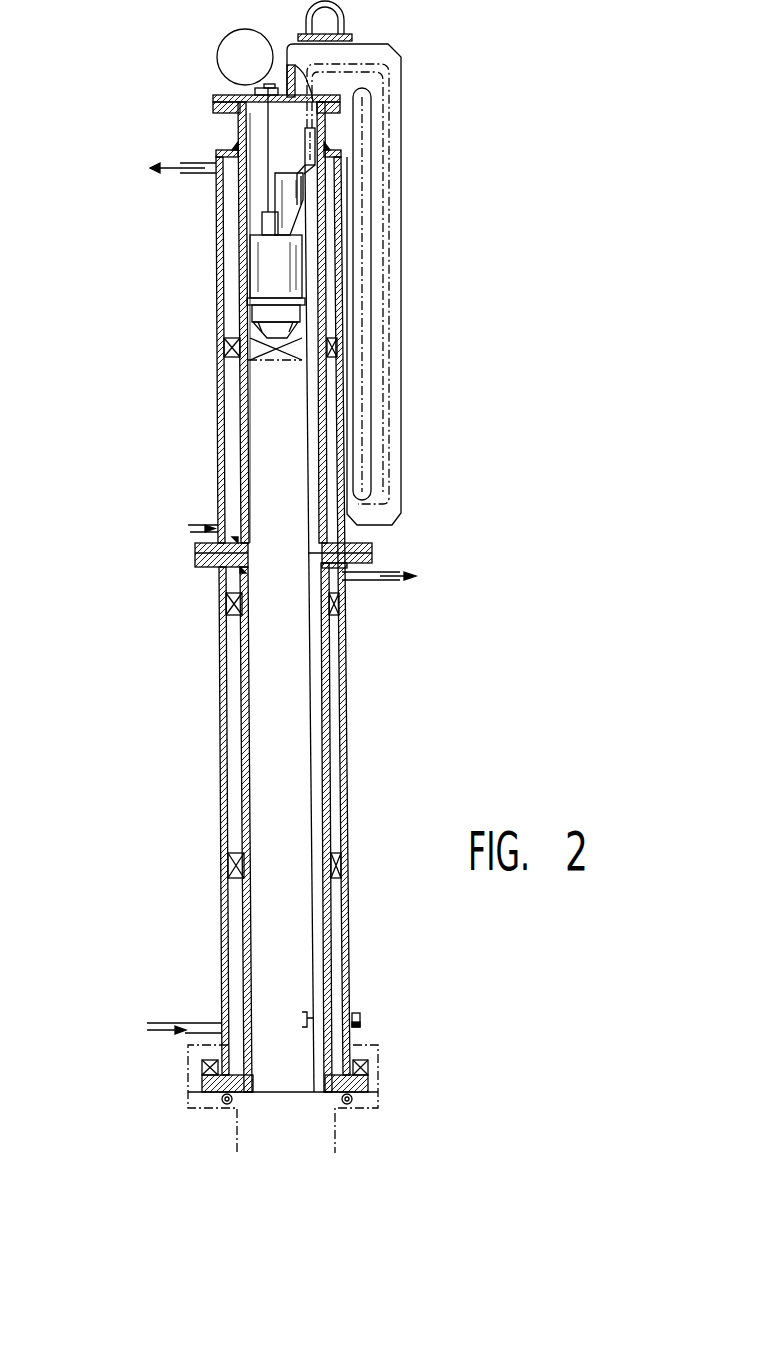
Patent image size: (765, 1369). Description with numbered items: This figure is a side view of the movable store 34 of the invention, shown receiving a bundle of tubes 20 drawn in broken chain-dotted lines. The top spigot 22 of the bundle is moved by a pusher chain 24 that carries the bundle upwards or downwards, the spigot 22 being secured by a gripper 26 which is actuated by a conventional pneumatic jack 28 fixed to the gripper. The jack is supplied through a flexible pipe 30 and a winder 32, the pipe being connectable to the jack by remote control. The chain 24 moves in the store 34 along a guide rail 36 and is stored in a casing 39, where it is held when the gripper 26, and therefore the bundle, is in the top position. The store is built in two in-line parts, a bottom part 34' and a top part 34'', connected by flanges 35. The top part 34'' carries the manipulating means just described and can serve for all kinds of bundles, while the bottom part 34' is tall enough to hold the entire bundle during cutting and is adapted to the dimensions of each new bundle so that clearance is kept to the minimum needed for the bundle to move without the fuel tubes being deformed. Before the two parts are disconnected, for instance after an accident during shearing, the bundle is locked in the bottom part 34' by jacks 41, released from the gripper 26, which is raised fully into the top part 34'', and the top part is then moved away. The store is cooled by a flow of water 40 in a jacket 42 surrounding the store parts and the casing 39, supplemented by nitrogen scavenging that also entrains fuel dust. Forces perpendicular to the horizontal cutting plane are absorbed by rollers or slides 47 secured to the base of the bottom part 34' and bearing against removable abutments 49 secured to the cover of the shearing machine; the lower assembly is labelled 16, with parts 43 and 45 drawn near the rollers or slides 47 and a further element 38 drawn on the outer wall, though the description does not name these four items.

The well casing / pipe 16 is at (297, 1161).
The bundle of tubes 20 is at (248, 540).
The top spigot 22 is at (270, 362).
The pusher chain 24 is at (377, 62).
The gripper 26 is at (268, 315).
The pneumatic jack 28 is at (263, 258).
The flexible pipe 30 is at (268, 128).
The winder 32 is at (228, 60).
The store 34 is at (201, 829).
The bottom part of store 34' is at (199, 887).
The top part of store 34'' is at (202, 322).
The flanges 35 is at (375, 552).
The guide rail 36 is at (315, 680).
The outer tube 38 is at (345, 826).
The casing 39 is at (403, 303).
The flow of water 40 is at (222, 1030).
The jack 41 is at (358, 1016).
The jacket 42 is at (242, 685).
The right seal block 43 is at (353, 1084).
The left seal block 45 is at (212, 1096).
The rollers or slides 47 is at (205, 1063).
The abutments 49 is at (375, 1050).